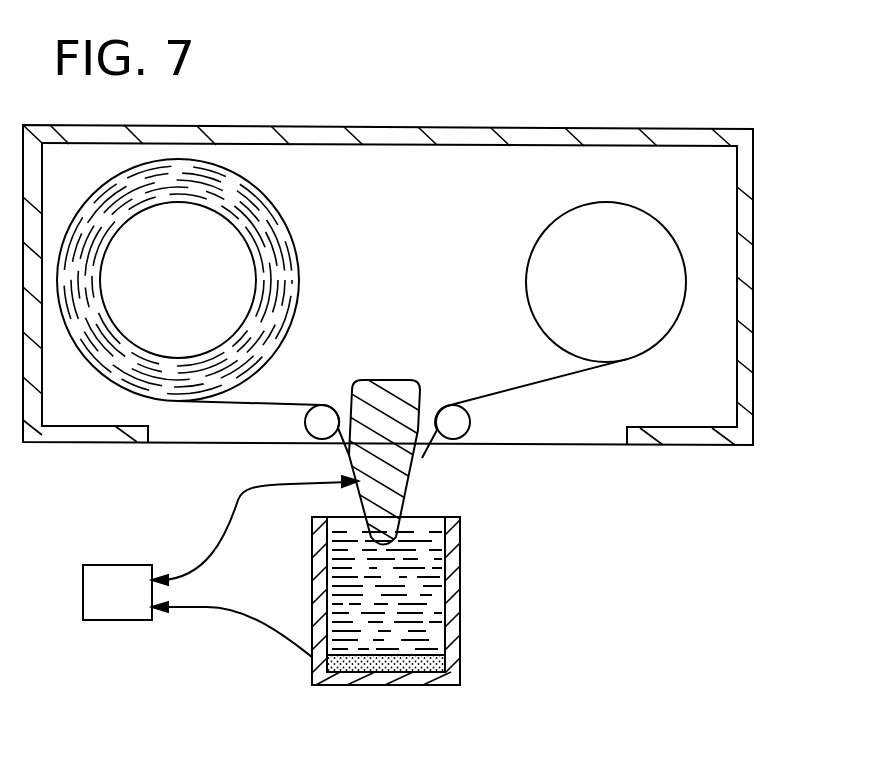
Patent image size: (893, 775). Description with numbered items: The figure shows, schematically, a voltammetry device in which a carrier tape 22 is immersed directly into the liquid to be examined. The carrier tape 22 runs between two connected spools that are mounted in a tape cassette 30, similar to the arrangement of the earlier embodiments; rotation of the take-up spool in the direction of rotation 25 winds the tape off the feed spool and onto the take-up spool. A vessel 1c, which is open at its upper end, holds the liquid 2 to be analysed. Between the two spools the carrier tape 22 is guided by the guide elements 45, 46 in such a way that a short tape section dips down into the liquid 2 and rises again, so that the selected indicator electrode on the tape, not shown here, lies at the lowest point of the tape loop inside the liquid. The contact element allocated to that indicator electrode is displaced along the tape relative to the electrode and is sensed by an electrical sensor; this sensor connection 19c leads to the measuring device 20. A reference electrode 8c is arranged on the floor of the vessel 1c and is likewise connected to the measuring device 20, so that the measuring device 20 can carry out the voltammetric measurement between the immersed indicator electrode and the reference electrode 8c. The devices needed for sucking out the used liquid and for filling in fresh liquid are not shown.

The tape cassette 30 is at (687, 140).
The carrier tape 22 is at (537, 383).
The direction of rotation 25 is at (657, 264).
The guide element 46 is at (322, 420).
The guide element 45 is at (402, 476).
The signal line 19c is at (255, 516).
The measuring device 20 is at (197, 611).
The vessel 1c is at (448, 571).
The liquid 2 is at (428, 618).
The reference electrode 8c is at (400, 668).